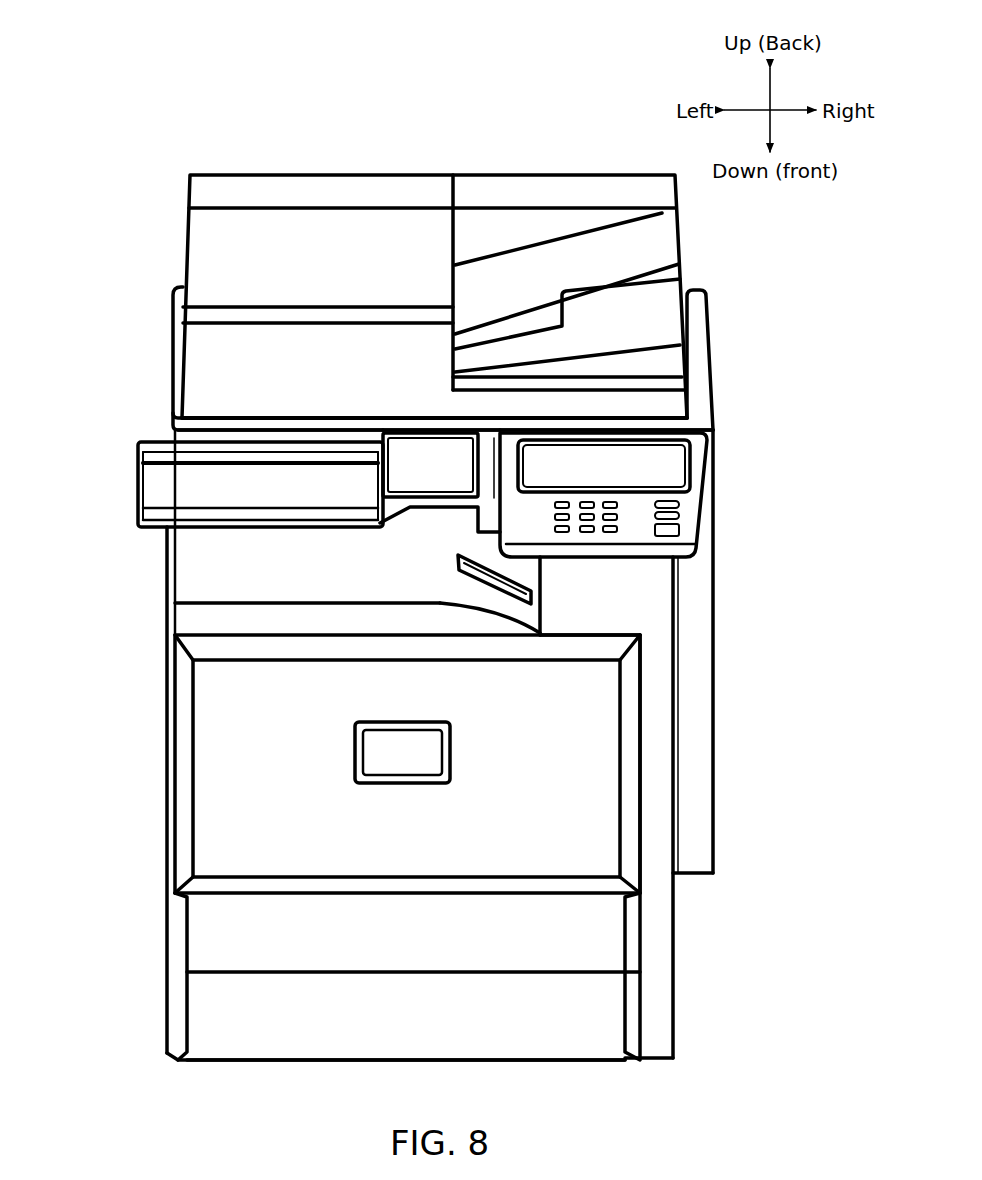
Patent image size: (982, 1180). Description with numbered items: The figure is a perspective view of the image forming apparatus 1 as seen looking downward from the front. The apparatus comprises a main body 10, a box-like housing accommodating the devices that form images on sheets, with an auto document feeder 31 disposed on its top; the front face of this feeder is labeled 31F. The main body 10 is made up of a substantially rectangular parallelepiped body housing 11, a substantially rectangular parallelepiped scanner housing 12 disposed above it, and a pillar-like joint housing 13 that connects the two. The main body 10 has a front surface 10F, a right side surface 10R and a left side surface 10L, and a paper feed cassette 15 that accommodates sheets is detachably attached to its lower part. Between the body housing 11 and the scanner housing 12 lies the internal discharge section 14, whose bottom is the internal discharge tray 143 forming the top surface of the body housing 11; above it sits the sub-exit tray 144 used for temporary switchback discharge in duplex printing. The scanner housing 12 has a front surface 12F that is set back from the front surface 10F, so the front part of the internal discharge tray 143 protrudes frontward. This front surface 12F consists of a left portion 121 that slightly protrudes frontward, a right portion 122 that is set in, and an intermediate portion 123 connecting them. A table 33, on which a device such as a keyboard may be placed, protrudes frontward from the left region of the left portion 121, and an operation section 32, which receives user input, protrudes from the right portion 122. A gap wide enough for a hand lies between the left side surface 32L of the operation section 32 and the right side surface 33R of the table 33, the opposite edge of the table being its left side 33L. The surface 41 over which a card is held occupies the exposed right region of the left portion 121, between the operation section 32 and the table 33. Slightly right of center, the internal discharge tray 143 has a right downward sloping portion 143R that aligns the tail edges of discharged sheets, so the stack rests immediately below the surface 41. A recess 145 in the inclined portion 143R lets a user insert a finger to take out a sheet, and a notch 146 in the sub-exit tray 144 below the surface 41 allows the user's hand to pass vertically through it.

The image forming apparatus 1 is at (135, 193).
The auto document feeder 31 is at (305, 240).
The front surface of document cover 31F is at (223, 416).
The left portion 121 is at (283, 437).
The right side surface of the table 33R is at (375, 437).
The surface over which a card is held 41 is at (433, 440).
The intermediate portion 123 is at (490, 430).
The right portion 122 is at (640, 416).
The front surface of the scanner housing 12F is at (718, 433).
The table 33 is at (192, 488).
The left side surface of the operation section 32L is at (492, 476).
The scanner housing 12 is at (714, 452).
The left end of discharge tray 33L is at (138, 490).
The internal discharge section 14 is at (198, 561).
The notch 146 is at (441, 512).
The joint housing 13 is at (655, 593).
The main body 10 is at (796, 456).
The operation section 32 is at (592, 556).
The internal discharge tray 143 is at (300, 578).
The sub-exit tray 144 is at (383, 524).
The recess 145 is at (488, 583).
The right downward sloping portion 143R is at (500, 620).
The body housing 11 is at (680, 730).
The left side surface 10L is at (178, 762).
The front surface 10F is at (255, 828).
The right side surface 10R is at (718, 848).
The paper feed cassette 15 is at (222, 935).